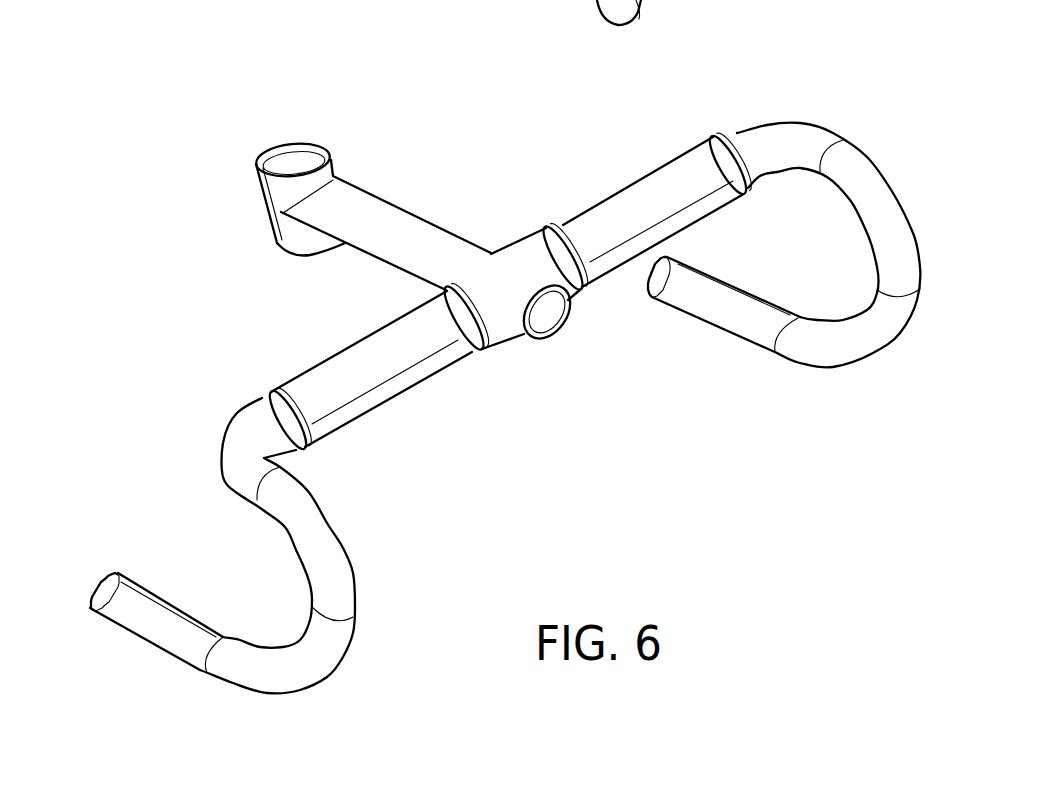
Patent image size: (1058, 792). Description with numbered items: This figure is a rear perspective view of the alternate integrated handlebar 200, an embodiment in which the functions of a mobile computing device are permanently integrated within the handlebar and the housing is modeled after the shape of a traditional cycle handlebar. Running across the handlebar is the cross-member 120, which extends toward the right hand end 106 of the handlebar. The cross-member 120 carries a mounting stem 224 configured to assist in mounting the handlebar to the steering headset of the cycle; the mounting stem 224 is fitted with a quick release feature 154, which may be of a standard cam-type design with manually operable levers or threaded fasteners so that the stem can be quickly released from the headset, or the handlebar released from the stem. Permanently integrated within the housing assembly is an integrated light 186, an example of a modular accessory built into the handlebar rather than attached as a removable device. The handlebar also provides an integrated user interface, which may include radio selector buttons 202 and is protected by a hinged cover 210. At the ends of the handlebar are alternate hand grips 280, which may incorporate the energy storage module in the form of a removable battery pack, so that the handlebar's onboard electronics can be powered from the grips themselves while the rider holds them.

The alternate integrated handlebar 200 is at (165, 72).
The right hand end 106 is at (647, 10).
The quick release feature 154 is at (257, 197).
The mounting stem 224 is at (376, 201).
The cross-member 120 is at (547, 230).
The integrated light 186 is at (553, 335).
The hinged cover 210 is at (285, 362).
The radio selector buttons 202 is at (772, 128).
The alternate hand grips 280 is at (737, 368).